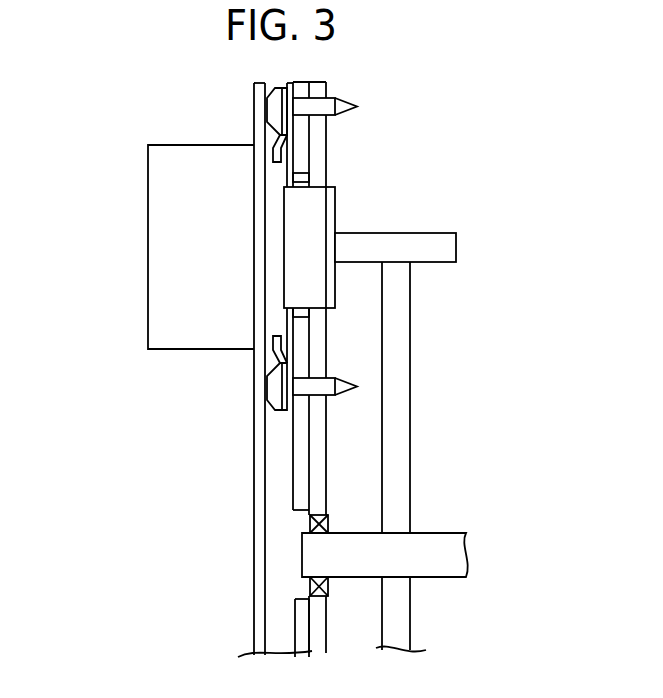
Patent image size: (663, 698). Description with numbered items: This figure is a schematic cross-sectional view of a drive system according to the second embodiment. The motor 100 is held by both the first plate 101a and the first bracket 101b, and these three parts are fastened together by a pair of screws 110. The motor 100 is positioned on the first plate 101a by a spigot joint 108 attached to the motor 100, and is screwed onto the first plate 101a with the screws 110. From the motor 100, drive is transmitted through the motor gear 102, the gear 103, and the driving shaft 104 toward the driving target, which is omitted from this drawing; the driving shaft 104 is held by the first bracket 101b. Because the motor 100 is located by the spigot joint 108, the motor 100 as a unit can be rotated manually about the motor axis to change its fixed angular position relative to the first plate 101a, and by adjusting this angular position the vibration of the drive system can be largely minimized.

The motor 100 is at (163, 243).
The first plate 101a is at (298, 625).
The first bracket 101b is at (320, 142).
The motor gear 102 is at (398, 240).
The gear 103 is at (398, 412).
The driving shaft 104 is at (438, 546).
The spigot joint 108 is at (277, 147).
The screws 110 is at (330, 100).